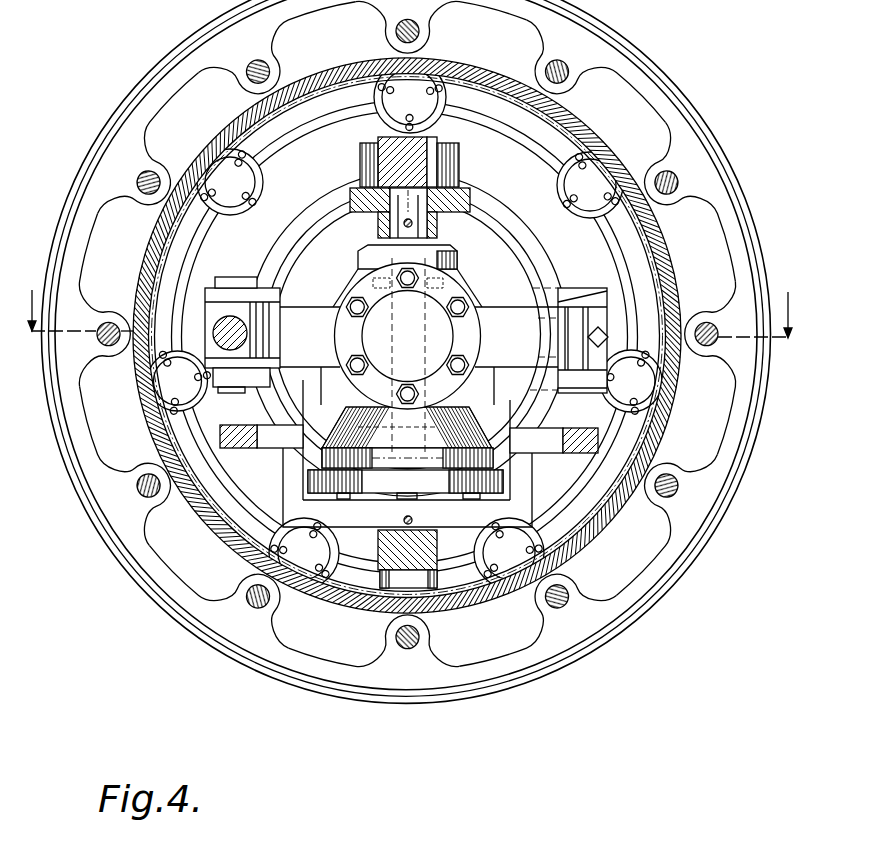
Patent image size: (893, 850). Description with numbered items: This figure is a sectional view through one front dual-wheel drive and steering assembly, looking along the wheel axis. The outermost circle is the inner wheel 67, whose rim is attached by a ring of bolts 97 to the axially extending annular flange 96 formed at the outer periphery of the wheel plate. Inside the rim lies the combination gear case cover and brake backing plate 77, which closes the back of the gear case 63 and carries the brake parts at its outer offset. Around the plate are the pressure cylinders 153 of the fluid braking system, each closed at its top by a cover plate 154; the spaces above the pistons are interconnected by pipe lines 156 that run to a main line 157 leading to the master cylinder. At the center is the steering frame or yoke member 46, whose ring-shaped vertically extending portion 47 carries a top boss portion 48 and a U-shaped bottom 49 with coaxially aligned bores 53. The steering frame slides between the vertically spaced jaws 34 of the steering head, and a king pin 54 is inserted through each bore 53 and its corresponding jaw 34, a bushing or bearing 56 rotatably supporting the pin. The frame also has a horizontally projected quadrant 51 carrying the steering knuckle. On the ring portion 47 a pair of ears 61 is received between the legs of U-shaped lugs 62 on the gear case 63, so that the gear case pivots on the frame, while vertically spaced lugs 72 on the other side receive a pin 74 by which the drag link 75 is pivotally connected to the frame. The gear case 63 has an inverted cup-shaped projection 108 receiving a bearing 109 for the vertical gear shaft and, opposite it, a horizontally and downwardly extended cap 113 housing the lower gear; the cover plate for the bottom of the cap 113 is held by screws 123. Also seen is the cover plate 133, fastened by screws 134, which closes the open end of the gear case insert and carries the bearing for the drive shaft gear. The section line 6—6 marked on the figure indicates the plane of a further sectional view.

The inner wheel 67 is at (612, 28).
The bolts 97 is at (566, 90).
The annular flange 96 is at (676, 290).
The combination gear case cover and brake backing plate 77 is at (405, 337).
The pipe lines 156 is at (632, 232).
The main line 157 is at (426, 90).
The cover plate 154 is at (432, 114).
The pressure cylinder 153 is at (436, 96).
The steering frame 46 is at (322, 196).
The vertically extending portion 47 is at (304, 244).
The jaws 34 is at (444, 166).
The king pin 54 is at (420, 214).
The top boss portion 48 is at (380, 235).
The bores 53 is at (436, 233).
The cap 113 is at (407, 407).
The screws 123 is at (418, 487).
The U-shaped bottom 49 is at (528, 484).
The bushing or bearing 56 is at (412, 519).
The quadrant 51 is at (252, 427).
The inverted cup-shaped projection 108 is at (358, 265).
The cover plate 133 is at (468, 326).
The screws 134 is at (464, 364).
The bearing 109 is at (446, 272).
The pin 74 is at (226, 290).
The lugs 72 is at (256, 300).
The drag link 75 is at (226, 336).
The U-shaped lug 62 is at (580, 296).
The ears 61 is at (585, 330).
The gear case 63 is at (521, 344).
The section line 6- 6 is at (407, 300).